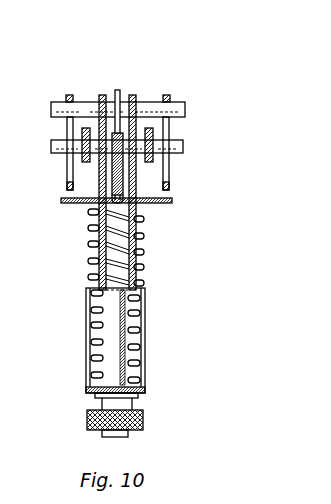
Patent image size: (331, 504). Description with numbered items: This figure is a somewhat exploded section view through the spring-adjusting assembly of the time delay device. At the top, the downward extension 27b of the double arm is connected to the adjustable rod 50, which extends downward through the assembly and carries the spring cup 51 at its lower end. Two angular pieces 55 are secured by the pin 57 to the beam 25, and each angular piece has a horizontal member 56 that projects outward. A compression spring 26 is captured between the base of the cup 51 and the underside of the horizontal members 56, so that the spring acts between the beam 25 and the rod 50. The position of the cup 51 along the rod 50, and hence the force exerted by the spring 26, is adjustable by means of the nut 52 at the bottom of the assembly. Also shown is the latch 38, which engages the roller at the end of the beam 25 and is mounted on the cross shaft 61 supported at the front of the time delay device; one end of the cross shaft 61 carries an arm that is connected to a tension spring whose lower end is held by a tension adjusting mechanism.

The beam 25 is at (82, 133).
The compression spring 26 is at (141, 236).
The downward extension 27b is at (68, 95).
The latch 38 is at (117, 90).
The adjustable rod 50 is at (101, 95).
The spring cup 51 is at (150, 305).
The nut 52 is at (145, 422).
The angular piece 55 is at (112, 172).
The horizontal member 56 is at (62, 201).
The pin 57 is at (183, 146).
The cross shaft 61 is at (185, 108).